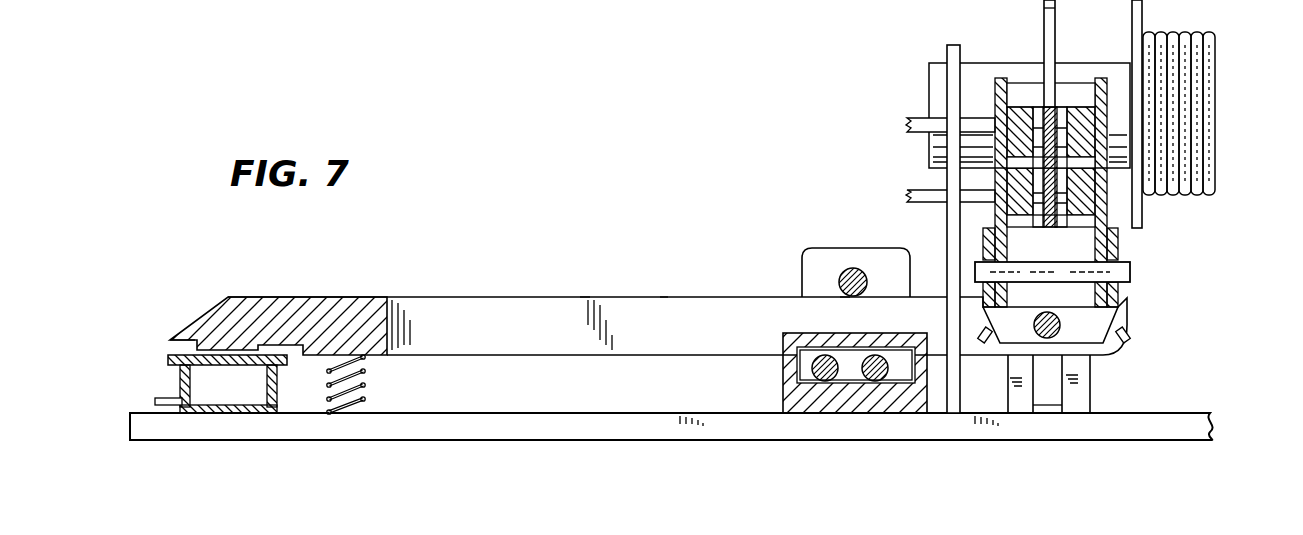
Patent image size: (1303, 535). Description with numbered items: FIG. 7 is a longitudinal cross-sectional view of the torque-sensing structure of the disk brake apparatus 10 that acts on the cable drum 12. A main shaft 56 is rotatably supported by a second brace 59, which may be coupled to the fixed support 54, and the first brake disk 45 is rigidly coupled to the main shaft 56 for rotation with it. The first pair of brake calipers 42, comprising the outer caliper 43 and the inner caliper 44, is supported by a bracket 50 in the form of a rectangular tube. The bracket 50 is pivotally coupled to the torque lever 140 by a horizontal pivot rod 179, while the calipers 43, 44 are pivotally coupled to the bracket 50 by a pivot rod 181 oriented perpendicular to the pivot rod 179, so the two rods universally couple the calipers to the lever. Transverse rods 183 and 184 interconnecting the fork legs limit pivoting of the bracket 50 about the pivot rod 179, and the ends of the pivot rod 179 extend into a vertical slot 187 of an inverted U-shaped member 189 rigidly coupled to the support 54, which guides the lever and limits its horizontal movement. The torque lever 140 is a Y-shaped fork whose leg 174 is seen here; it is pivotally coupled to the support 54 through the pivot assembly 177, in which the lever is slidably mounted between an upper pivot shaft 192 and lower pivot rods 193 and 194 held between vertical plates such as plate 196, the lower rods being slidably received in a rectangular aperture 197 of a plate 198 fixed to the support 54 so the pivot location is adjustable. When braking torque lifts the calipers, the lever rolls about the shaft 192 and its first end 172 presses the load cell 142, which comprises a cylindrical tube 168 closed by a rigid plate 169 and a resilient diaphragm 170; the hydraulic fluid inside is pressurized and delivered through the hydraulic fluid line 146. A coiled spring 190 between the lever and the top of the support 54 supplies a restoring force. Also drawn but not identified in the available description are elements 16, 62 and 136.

The disk brake apparatus 10 is at (882, 135).
The cable drum 12 is at (1235, 25).
The bellows spring 16 is at (1215, 67).
The first pair of brake calipers 42 is at (1030, 45).
The outer caliper 43 is at (997, 85).
The inner caliper 44 is at (1107, 78).
The first brake disk 45 is at (1085, 4).
The bracket 50 is at (1118, 242).
The fixed support 54 is at (1215, 408).
The main shaft 56 is at (987, 60).
The second brace 59 is at (957, 47).
The mounting plate 62 is at (1147, 2).
The carriage assembly 136 is at (588, 247).
The torque lever 140 is at (472, 295).
The load cell 142 is at (165, 350).
The hydraulic fluid line 146 is at (162, 398).
The cylindrical tube 168 is at (270, 388).
The rigid plate 169 is at (242, 413).
The resilient diaphragm 170 is at (245, 355).
The first end 172 is at (205, 320).
The leg 174 is at (668, 297).
The pivot assembly 177 is at (823, 237).
The pivot rod 179 is at (1065, 307).
The pivot rod 181 is at (1130, 273).
The transverse rod 183 is at (1130, 333).
The transverse rod 184 is at (973, 338).
The slot 187 is at (1057, 403).
The inverted U-shaped member 189 is at (1090, 395).
The coiled spring 190 is at (368, 383).
The upper pivot shaft 192 is at (857, 273).
The lower pivot rod 193 is at (813, 360).
The lower pivot rod 194 is at (867, 363).
The vertically oriented plate 196 is at (802, 253).
The rectangular-shaped aperture 197 is at (893, 383).
The plate 198 is at (783, 402).